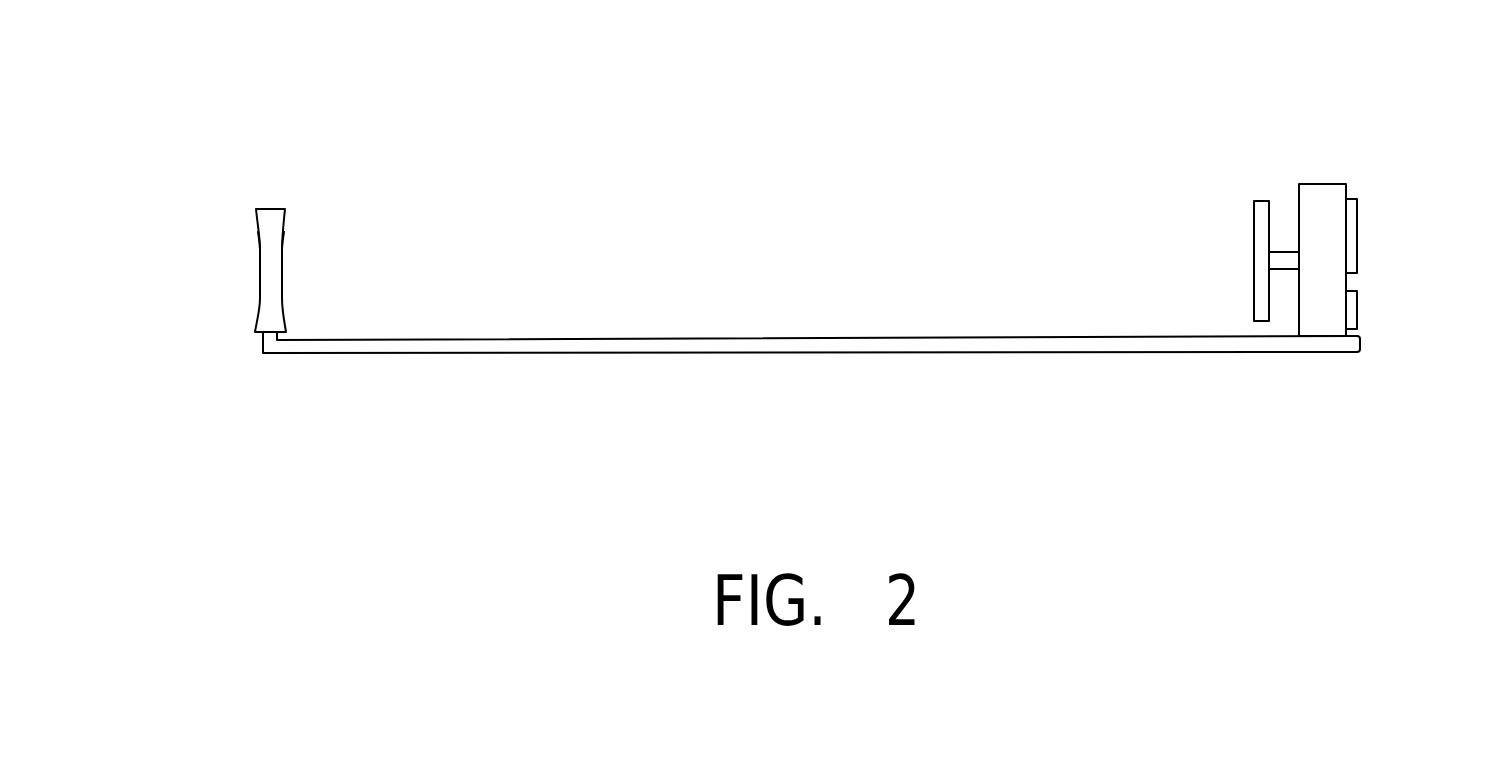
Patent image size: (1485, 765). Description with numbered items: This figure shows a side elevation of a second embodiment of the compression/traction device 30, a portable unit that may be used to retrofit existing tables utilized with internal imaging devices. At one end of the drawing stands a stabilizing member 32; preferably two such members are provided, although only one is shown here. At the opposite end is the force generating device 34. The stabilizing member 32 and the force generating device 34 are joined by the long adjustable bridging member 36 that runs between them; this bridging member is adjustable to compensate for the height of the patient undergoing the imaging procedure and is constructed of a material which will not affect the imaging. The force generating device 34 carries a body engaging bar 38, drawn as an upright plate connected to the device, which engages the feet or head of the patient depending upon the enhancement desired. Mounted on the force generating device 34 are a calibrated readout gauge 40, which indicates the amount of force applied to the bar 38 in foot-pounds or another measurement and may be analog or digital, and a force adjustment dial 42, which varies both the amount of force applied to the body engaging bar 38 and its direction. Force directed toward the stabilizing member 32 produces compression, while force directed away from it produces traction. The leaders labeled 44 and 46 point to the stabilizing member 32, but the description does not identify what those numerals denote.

The compression/traction device 30 is at (691, 371).
The stabilizing member 32 is at (271, 209).
The force generating device 34 is at (1311, 184).
The adjustable bridging member 36 is at (742, 338).
The body engaging bar 38 is at (1253, 232).
The calibrated readout gauge 40 is at (1358, 235).
The force adjustment dial 42 is at (1358, 308).
The spool body 44 is at (285, 235).
The fiber 46 is at (257, 235).